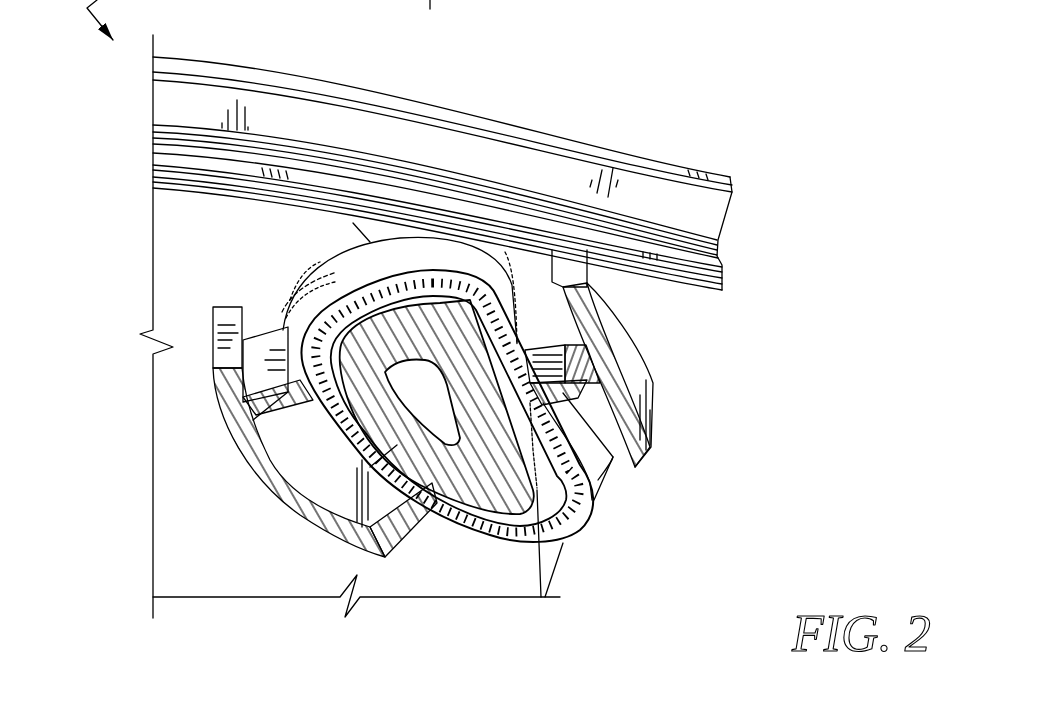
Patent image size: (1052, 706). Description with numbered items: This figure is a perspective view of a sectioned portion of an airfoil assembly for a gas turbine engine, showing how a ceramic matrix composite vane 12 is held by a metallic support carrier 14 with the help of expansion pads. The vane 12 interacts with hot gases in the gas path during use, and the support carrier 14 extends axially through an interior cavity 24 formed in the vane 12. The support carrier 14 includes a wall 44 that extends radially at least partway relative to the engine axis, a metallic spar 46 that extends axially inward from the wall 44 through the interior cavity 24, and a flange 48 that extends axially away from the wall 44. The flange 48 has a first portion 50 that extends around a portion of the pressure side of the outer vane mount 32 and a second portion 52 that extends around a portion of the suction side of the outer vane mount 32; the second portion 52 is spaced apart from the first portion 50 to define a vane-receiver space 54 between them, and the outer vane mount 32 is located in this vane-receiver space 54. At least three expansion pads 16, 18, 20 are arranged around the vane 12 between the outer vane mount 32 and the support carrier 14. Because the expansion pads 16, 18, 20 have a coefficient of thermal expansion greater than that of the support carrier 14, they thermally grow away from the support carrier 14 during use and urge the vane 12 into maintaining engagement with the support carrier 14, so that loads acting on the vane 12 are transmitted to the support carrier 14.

The vane 12 is at (622, 507).
The support carrier 14 is at (298, 245).
The expansion pad 16 is at (553, 340).
The expansion pad 18 is at (288, 428).
The expansion pad 20 is at (425, 527).
The interior cavity 24 is at (543, 492).
The outer vane mount 32 is at (563, 543).
The wall 44 is at (242, 226).
The metallic spar 46 is at (368, 305).
The flange 48 is at (223, 268).
The first portion 50 is at (637, 343).
The second portion 52 is at (220, 427).
The vane-receiver space 54 is at (513, 277).